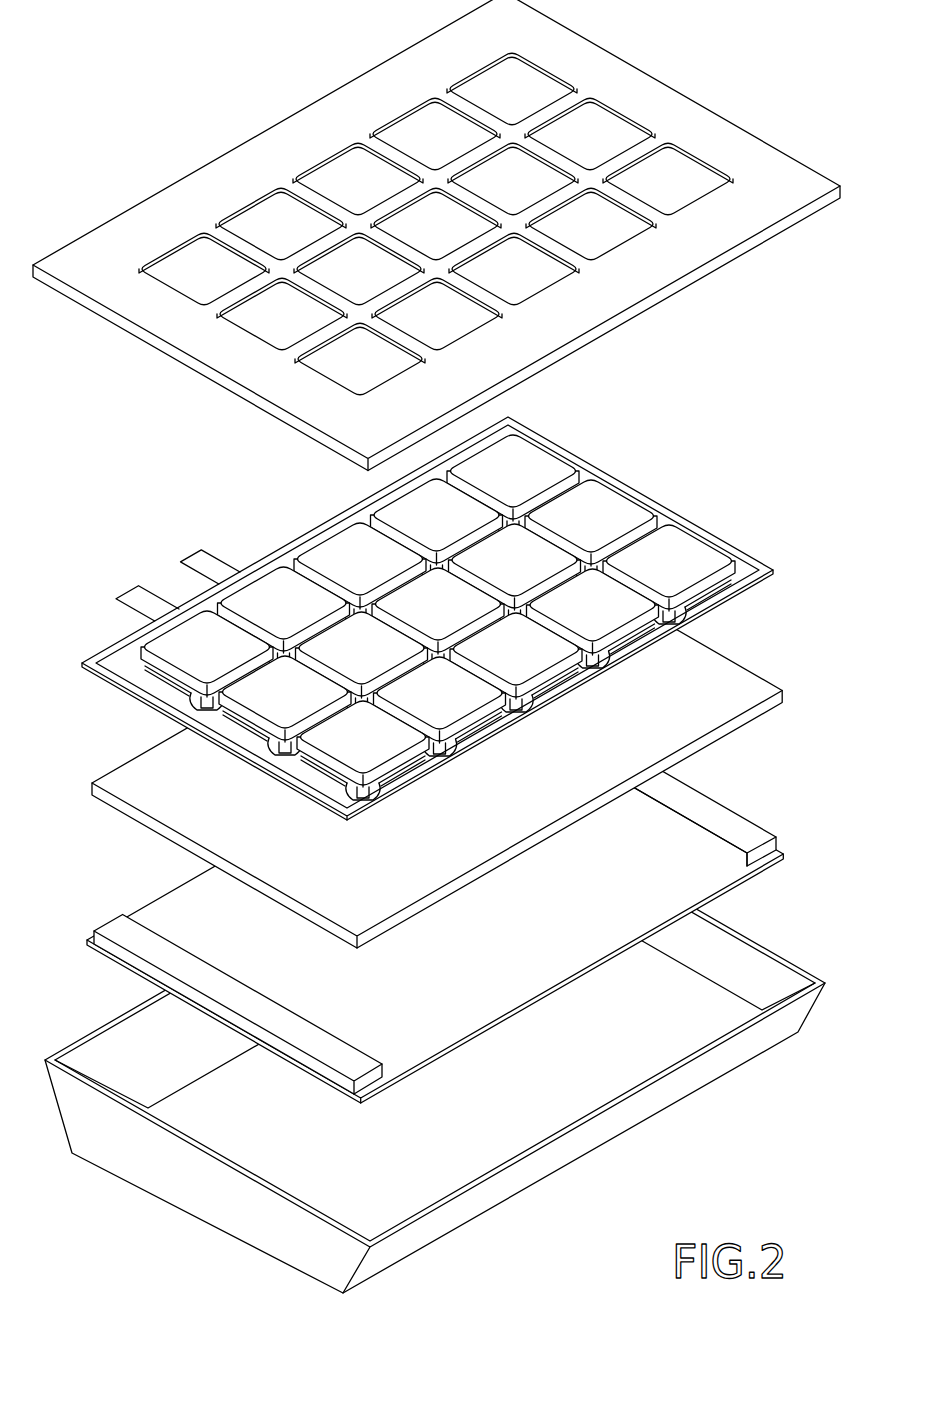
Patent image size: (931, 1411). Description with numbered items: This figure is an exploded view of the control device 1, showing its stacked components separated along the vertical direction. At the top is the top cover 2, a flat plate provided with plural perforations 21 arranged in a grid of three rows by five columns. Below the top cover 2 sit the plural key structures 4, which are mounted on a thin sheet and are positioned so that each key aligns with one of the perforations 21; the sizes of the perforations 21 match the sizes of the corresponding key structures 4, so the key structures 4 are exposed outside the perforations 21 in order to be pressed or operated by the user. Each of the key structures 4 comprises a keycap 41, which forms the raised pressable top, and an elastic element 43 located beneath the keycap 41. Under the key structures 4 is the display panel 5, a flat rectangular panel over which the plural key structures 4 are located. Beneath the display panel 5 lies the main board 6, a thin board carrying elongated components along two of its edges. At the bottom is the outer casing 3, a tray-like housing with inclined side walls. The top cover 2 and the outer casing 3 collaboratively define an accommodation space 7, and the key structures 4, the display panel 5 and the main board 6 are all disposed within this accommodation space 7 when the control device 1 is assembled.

The control device 1 is at (113, 50).
The top cover 2 is at (436, 235).
The perforations 21 is at (595, 135).
The outer casing 3 is at (435, 1044).
The key structures 4 is at (433, 618).
The keycap 41 is at (462, 617).
The elastic element 43 is at (740, 573).
The display panel 5 is at (158, 765).
The main board 6 is at (178, 903).
The accommodation space 7 is at (207, 1112).